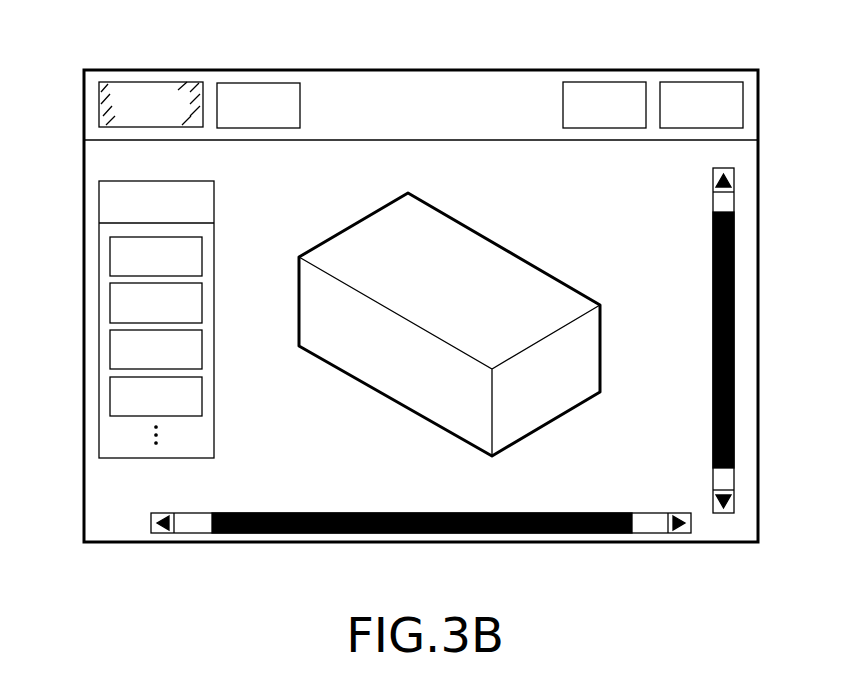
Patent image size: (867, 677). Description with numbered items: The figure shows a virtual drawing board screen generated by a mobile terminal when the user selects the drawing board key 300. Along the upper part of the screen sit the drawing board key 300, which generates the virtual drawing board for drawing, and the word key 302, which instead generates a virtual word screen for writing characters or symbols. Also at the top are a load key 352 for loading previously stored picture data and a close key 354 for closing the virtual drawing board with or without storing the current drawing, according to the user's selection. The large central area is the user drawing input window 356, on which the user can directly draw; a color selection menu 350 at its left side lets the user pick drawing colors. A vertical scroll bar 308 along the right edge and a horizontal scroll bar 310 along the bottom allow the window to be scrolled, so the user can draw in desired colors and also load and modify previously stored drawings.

The drawing board key 300 is at (150, 82).
The word key 302 is at (256, 82).
The load key 352 is at (603, 82).
The close key 354 is at (698, 82).
The color selection menu 350 is at (99, 210).
The vertical scroll bar 308 is at (735, 389).
The horizontal scroll bar 310 is at (427, 534).
The user drawing input window 356 is at (99, 510).